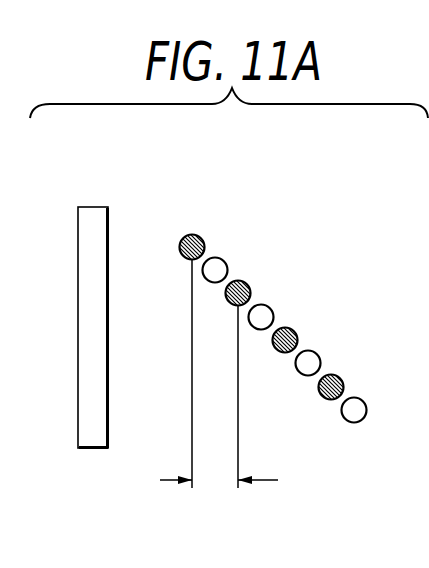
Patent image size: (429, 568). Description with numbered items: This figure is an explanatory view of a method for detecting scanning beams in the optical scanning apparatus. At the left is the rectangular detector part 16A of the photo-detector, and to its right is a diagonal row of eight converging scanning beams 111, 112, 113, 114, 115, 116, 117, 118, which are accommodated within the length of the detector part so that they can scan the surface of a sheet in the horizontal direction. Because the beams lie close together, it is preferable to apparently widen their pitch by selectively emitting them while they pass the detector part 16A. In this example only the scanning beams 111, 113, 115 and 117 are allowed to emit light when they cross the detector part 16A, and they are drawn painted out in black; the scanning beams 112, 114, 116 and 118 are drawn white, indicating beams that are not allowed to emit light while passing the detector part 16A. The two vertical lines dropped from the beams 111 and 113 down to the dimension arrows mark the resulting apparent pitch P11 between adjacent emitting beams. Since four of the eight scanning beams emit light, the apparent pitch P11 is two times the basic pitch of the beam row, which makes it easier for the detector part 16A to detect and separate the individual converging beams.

The detector part 16A is at (92, 449).
The scanning beam 111 is at (193, 233).
The scanning beam 112 is at (215, 258).
The scanning beam 113 is at (240, 280).
The scanning beam 114 is at (262, 304).
The scanning beam 115 is at (285, 327).
The scanning beam 116 is at (308, 350).
The scanning beam 117 is at (335, 375).
The scanning beam 118 is at (355, 398).
The apparent pitch P11 is at (219, 392).